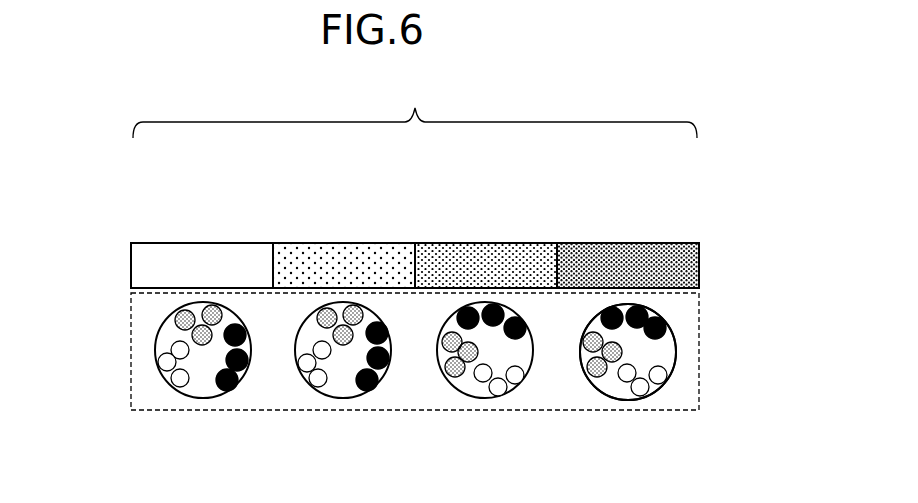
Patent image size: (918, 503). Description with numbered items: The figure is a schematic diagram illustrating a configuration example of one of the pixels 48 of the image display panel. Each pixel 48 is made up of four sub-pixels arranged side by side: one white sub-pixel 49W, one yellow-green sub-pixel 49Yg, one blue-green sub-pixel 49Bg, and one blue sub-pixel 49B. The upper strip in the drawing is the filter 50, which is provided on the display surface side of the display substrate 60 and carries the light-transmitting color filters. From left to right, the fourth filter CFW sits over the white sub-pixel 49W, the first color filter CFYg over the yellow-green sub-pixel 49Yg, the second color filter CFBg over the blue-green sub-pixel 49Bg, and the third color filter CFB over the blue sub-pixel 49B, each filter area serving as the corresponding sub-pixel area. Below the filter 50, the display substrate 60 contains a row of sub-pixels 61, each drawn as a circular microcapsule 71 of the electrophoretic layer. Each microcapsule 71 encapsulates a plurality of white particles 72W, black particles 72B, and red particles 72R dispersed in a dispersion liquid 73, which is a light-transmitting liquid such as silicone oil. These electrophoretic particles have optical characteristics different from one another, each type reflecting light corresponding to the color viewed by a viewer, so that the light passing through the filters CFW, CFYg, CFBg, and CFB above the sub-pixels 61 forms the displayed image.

The pixel 48 is at (415, 111).
The white sub-pixel 49W is at (205, 218).
The yellow-green sub-pixel 49Yg is at (345, 218).
The blue-green sub-pixel 49Bg is at (489, 218).
The blue sub-pixel 49B is at (630, 218).
The filter 50 is at (377, 236).
The display substrate 60 is at (125, 362).
The sub-pixel 61 is at (460, 394).
The microcapsule 71 is at (676, 352).
The red particles 72R is at (600, 370).
The black particles 72B is at (663, 322).
The white particles 72W is at (661, 380).
The dispersion liquid 73 is at (640, 354).
The fourth filter CFW is at (152, 241).
The first color filter CFYg is at (292, 241).
The second color filter CFBg is at (434, 241).
The third color filter CFB is at (577, 241).